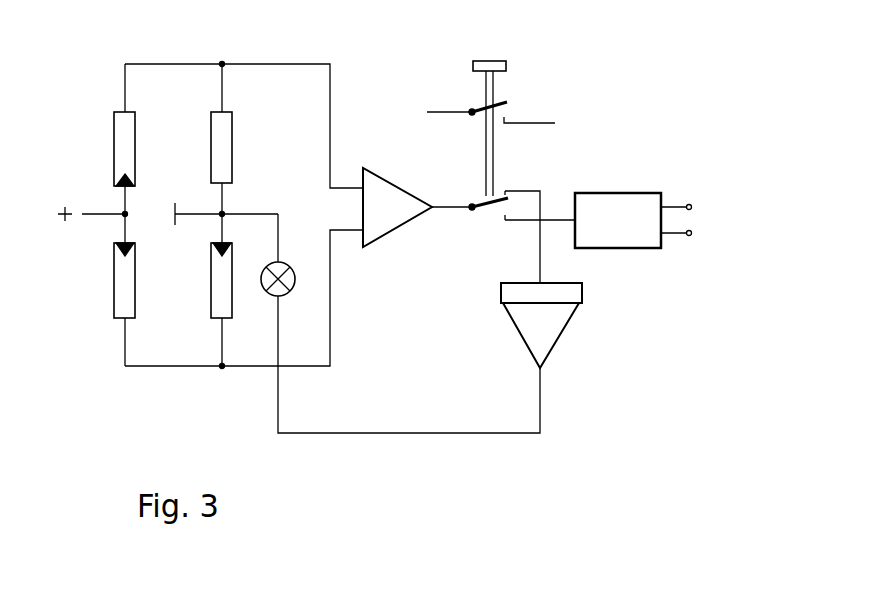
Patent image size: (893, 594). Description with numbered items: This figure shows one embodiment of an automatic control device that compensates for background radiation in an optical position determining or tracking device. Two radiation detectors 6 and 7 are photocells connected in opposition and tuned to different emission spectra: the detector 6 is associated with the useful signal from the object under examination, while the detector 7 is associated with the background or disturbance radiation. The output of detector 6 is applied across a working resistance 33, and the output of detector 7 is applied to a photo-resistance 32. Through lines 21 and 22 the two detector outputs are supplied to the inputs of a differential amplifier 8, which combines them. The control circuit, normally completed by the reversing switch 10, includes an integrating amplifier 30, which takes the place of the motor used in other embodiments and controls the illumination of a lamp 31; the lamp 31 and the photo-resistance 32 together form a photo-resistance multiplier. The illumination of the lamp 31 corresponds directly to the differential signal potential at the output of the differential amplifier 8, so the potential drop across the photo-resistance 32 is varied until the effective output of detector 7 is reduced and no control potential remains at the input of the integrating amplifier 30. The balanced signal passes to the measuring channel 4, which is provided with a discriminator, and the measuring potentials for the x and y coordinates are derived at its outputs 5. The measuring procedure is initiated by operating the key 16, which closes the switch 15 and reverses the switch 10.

The measuring channel 4 is at (617, 193).
The outputs 5 is at (692, 207).
The radiation detector 6 is at (114, 148).
The radiation detector 7 is at (114, 290).
The differential amplifier 8 is at (392, 180).
The reversing switch 10 is at (480, 215).
The switch 15 is at (507, 101).
The key 16 is at (508, 60).
The line 21 is at (259, 64).
The line 22 is at (330, 305).
The integrating amplifier 30 is at (520, 336).
The lamp 31 is at (294, 290).
The photo-resistance 32 is at (232, 257).
The working resistance 33 is at (232, 140).